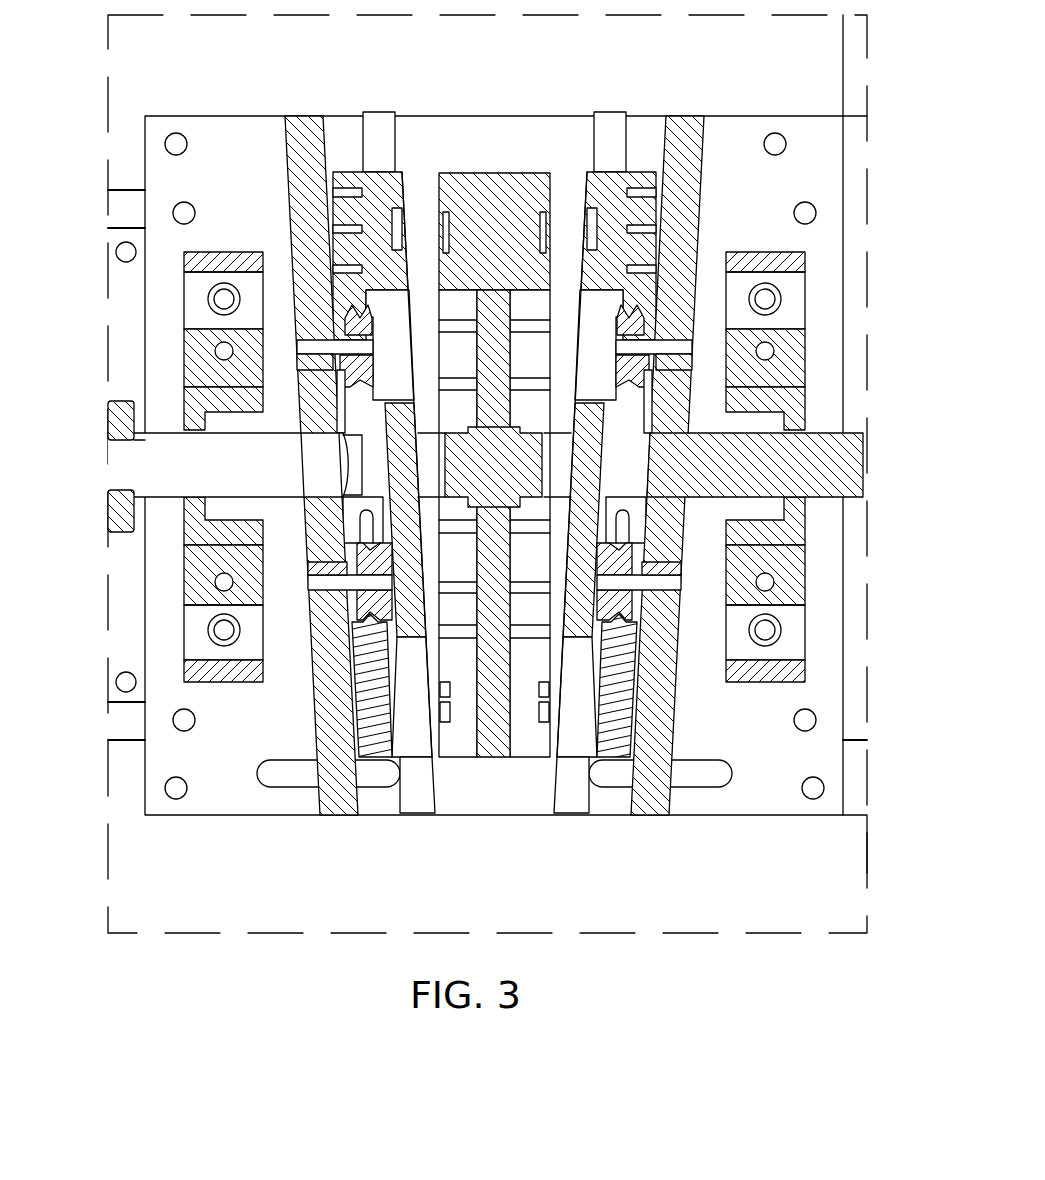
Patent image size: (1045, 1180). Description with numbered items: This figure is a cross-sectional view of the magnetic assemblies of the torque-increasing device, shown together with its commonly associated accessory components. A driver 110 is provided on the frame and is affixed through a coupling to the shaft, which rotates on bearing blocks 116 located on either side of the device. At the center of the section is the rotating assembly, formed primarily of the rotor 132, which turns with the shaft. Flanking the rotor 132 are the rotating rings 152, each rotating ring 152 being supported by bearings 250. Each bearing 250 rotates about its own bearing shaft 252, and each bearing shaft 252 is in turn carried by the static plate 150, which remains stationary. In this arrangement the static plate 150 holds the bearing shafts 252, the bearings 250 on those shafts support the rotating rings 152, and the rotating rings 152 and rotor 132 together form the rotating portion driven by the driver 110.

The driver 110 is at (258, 479).
The bearing block 116 is at (192, 525).
The rotor 132 is at (495, 760).
The static plate 150 is at (350, 818).
The rotating ring 152 is at (368, 747).
The bearing 250 is at (363, 308).
The bearing shaft 252 is at (297, 353).